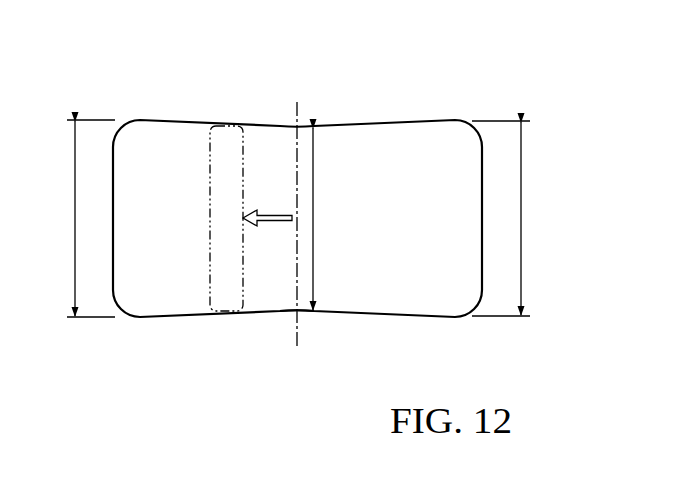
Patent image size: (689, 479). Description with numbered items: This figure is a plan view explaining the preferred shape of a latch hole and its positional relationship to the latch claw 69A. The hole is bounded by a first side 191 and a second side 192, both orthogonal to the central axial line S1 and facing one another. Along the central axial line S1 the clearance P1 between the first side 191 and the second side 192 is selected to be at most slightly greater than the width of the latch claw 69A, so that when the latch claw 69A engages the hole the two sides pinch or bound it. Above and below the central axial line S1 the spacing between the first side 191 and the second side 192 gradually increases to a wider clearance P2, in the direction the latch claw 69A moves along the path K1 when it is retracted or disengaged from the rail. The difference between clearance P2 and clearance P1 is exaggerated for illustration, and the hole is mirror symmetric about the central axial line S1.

The latch claw 69A is at (223, 187).
The path K1 is at (272, 210).
The first side 191 is at (404, 123).
The second side 192 is at (415, 314).
The clearance P1 is at (329, 219).
The wider clearance P2 is at (300, 218).
The central axial line S1 is at (295, 244).